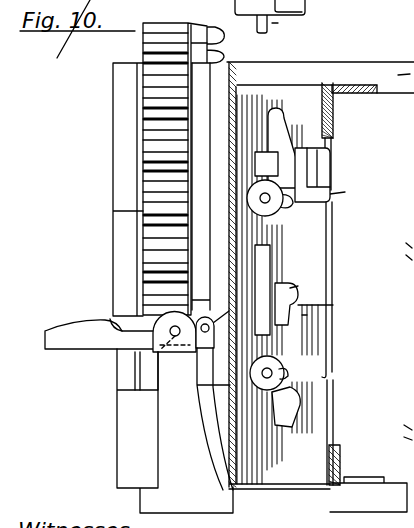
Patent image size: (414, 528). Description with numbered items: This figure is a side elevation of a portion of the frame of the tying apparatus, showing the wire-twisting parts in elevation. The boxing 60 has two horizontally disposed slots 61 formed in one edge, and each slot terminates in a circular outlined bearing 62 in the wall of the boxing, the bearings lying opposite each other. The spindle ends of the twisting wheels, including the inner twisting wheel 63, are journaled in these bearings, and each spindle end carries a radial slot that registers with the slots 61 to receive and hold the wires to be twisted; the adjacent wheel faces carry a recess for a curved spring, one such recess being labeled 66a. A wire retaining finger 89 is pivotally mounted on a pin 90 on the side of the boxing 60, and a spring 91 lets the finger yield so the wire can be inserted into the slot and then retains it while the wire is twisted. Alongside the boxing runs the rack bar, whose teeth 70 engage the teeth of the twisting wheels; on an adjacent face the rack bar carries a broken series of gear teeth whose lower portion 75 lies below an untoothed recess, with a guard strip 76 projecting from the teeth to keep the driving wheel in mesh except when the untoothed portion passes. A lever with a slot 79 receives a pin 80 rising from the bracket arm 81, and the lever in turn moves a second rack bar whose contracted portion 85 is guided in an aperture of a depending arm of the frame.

The contracted portion 85 is at (188, 97).
The lower portion of the series of teeth 75 is at (148, 157).
The guard strip 76 is at (138, 238).
The slot 79 is at (110, 320).
The teeth 70 is at (70, 341).
The pin 80 is at (143, 362).
The bracket arm 81 is at (175, 430).
The boxing 60 is at (314, 82).
The slots 61 is at (345, 377).
The wire retaining finger 89 is at (290, 336).
The pawl carrier 66a is at (278, 210).
The circular outlined bearing 62 is at (296, 223).
The twisting wheel 63 is at (280, 148).
The spring 91 is at (290, 288).
The pin 90 is at (298, 305).